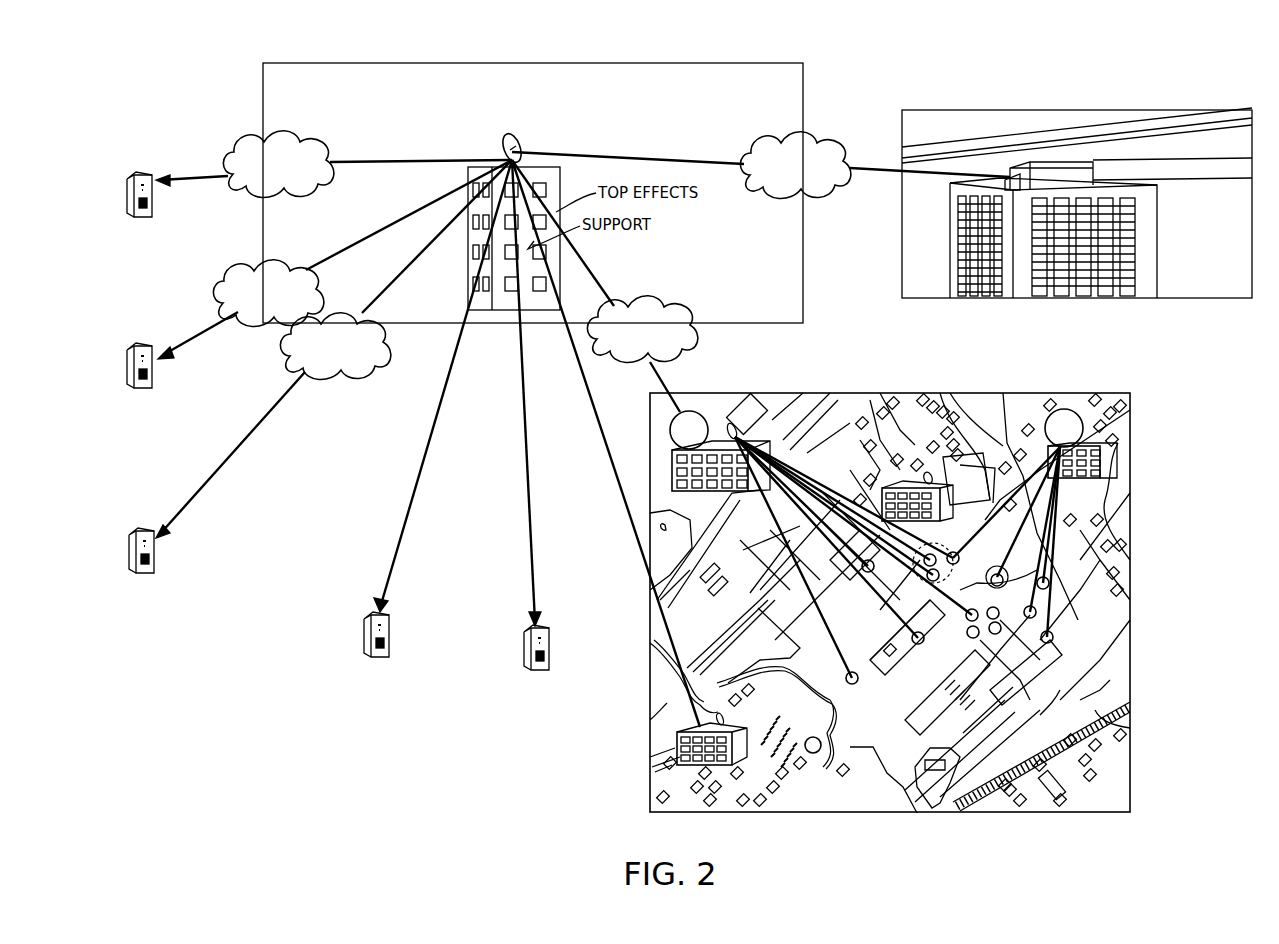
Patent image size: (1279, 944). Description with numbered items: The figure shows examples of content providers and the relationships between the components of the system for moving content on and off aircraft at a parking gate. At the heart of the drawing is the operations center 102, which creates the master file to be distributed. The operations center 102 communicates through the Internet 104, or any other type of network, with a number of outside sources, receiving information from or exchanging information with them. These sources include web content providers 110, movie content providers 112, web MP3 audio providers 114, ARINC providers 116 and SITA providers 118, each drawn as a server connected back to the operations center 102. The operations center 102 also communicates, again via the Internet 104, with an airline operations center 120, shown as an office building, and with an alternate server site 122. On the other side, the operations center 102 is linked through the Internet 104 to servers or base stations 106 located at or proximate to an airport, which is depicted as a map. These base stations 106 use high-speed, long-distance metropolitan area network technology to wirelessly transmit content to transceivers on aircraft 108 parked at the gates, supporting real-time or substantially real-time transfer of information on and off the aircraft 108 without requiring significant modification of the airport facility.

The operations center 102 is at (804, 258).
The Internet 104 is at (236, 138).
The base stations 106 is at (690, 410).
The aircraft 108 is at (1098, 672).
The web content providers 110 is at (153, 212).
The movie content providers 112 is at (153, 383).
The web MP3 audio providers 114 is at (155, 568).
The ARINC providers 116 is at (390, 650).
The SITA providers 118 is at (550, 665).
The airline operations center 120 is at (900, 204).
The alternate server site 122 is at (677, 748).